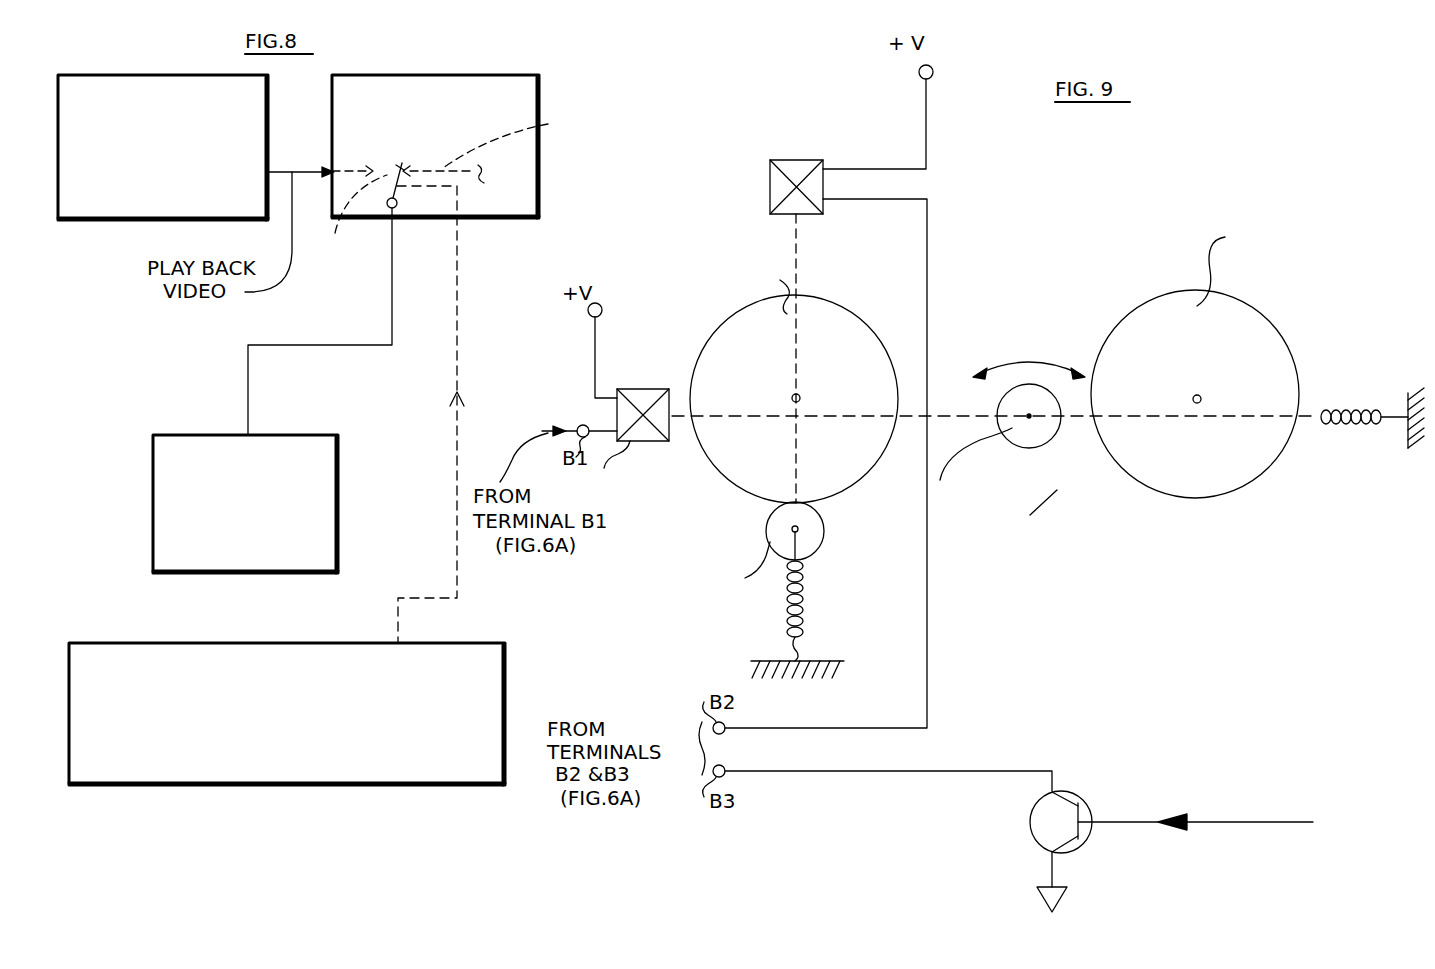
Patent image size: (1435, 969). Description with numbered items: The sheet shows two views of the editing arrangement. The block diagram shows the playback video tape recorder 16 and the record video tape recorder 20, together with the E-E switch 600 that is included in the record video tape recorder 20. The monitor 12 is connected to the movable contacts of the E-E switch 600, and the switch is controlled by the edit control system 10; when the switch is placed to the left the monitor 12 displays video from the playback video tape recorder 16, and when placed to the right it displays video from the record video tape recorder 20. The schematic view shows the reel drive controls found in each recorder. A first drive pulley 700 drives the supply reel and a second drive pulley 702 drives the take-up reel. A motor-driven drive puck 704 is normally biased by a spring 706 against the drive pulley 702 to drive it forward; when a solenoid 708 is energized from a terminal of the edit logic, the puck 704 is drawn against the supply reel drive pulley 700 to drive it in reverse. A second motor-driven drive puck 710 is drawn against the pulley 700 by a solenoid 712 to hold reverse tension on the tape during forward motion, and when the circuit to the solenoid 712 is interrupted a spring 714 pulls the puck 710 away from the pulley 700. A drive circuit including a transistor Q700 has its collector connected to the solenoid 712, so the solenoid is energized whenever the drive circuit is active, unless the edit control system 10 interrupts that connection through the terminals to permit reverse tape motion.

In FIG. 8, the playback video tape recorder 16 is at (118, 83).
In FIG. 8, the record video tape recorder 20 is at (383, 82).
In FIG. 8, the monitor 12 is at (160, 492).
In FIG. 8, the edit control system 10 is at (113, 652).
In FIG. 8, the E-E switch 600 is at (508, 208).
In FIG. 9, the supply reel drive pulley 700 is at (733, 338).
In FIG. 9, the take-up reel drive pulley 702 is at (1267, 364).
In FIG. 9, the drive puck 704 is at (1022, 392).
In FIG. 9, the spring 706 is at (1345, 425).
In FIG. 9, the solenoid 708 is at (665, 370).
In FIG. 9, the second drive puck 710 is at (812, 540).
In FIG. 9, the solenoid 712 is at (797, 165).
In FIG. 9, the spring 714 is at (808, 600).
In FIG. 9, the transistor Q700 is at (1075, 795).